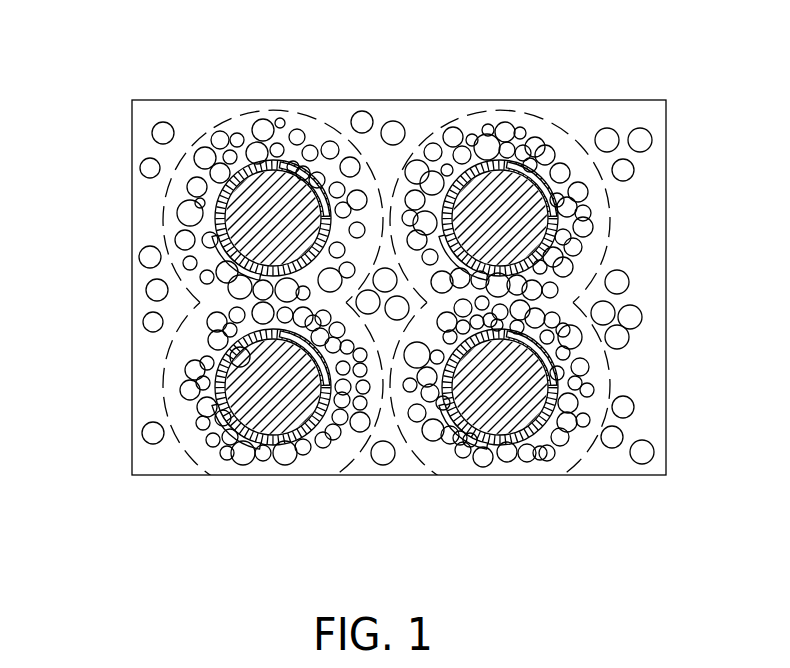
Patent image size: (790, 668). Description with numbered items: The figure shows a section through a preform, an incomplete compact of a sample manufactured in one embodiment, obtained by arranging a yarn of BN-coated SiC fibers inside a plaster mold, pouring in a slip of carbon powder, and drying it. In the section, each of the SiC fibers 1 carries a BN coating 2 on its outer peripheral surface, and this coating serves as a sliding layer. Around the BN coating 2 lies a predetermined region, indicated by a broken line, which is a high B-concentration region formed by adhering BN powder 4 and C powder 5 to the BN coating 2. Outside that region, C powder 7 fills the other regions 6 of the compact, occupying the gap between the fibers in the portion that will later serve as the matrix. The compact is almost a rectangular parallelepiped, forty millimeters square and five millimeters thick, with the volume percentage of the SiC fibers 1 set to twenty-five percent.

The SiC fibers 1 is at (282, 190).
The BN coating 2 is at (233, 160).
The BN powder 4 is at (318, 178).
The C powder 5 is at (203, 157).
The other regions 6 is at (150, 340).
The C powder 7 is at (393, 125).